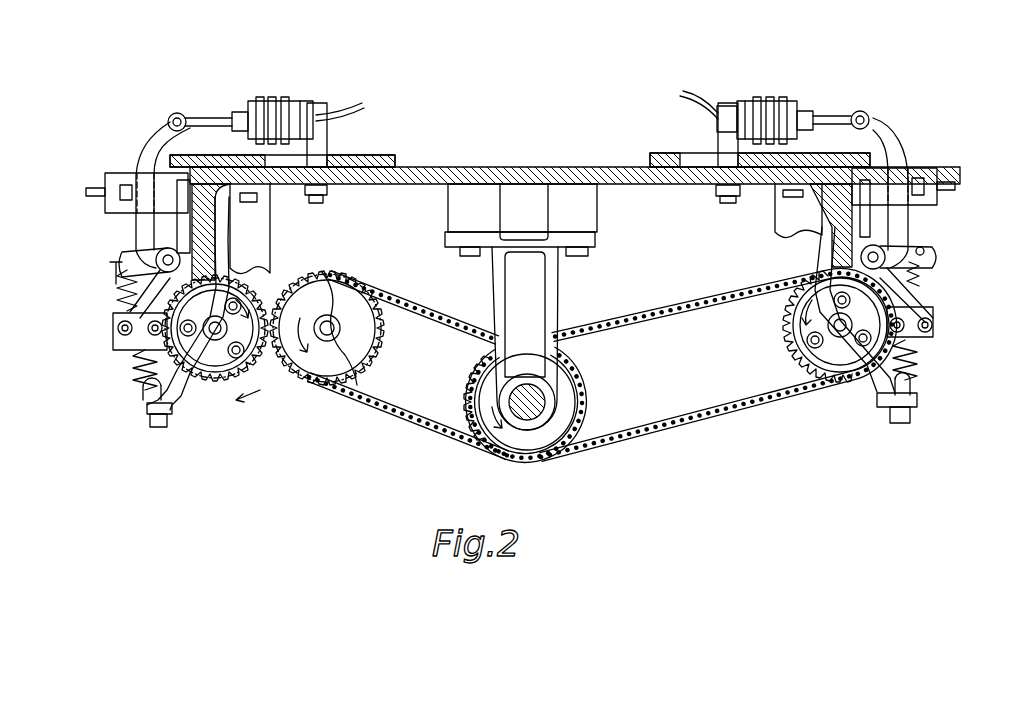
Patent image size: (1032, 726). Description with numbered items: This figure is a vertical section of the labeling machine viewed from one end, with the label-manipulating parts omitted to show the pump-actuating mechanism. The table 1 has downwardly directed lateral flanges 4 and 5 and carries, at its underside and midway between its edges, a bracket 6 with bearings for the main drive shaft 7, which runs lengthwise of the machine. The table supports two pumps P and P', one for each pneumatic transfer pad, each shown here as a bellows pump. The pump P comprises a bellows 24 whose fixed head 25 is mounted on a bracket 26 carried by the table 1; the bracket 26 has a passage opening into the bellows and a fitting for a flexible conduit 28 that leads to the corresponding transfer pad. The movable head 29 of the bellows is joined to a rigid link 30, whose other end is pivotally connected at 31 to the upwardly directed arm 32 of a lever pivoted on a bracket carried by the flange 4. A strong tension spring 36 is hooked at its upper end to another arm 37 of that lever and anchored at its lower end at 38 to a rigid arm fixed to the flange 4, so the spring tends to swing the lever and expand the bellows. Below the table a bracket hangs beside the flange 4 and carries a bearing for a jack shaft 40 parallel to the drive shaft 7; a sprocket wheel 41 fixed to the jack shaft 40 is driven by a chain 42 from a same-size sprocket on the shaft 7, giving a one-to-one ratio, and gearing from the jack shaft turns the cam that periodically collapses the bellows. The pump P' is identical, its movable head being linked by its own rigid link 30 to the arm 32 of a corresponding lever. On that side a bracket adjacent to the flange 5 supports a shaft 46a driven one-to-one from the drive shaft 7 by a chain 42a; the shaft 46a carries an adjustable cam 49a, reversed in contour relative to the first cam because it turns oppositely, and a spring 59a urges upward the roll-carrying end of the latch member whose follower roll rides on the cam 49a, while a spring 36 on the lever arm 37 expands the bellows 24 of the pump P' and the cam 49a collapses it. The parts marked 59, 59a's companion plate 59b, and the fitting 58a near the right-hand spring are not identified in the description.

The table 1 is at (613, 165).
The lateral flange 4 is at (203, 210).
The lateral flange 5 is at (836, 210).
The bracket 6 is at (555, 303).
The main drive shaft 7 is at (541, 400).
The bellows 24 is at (282, 100).
The fixed head 25 is at (300, 108).
The bracket 26 is at (322, 142).
The flexible conduit 28 is at (526, 93).
The movable head 29 is at (256, 103).
The rigid link 30 is at (213, 109).
The pivotal connection 31 is at (174, 116).
The lever arm 32 is at (152, 142).
The tension spring 36 is at (130, 362).
The lever arm 37 is at (905, 251).
The spring anchorage 38 is at (148, 407).
The jack shaft 40 is at (327, 340).
The sprocket wheel 41 is at (355, 308).
The chain 42 is at (398, 412).
The chain 42a is at (676, 428).
The shaft 46a is at (836, 330).
The cam 49a is at (806, 324).
The U-bolt 58a is at (912, 400).
The left lever 59 is at (177, 387).
The spring 59a is at (272, 240).
The guide plate 59b is at (780, 213).
The pump P is at (295, 44).
The pump P' is at (820, 59).